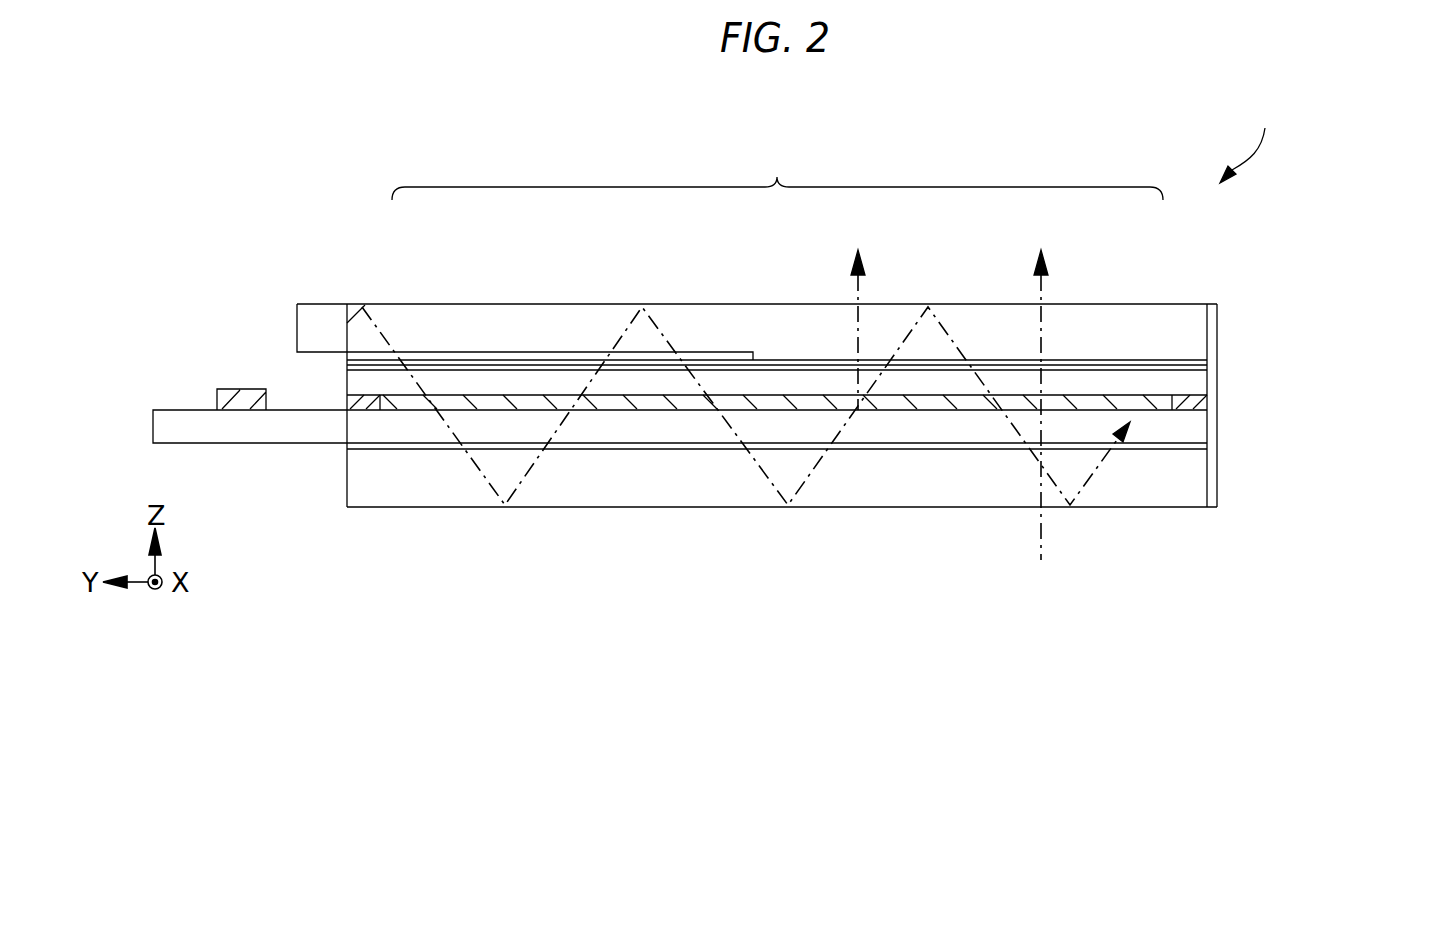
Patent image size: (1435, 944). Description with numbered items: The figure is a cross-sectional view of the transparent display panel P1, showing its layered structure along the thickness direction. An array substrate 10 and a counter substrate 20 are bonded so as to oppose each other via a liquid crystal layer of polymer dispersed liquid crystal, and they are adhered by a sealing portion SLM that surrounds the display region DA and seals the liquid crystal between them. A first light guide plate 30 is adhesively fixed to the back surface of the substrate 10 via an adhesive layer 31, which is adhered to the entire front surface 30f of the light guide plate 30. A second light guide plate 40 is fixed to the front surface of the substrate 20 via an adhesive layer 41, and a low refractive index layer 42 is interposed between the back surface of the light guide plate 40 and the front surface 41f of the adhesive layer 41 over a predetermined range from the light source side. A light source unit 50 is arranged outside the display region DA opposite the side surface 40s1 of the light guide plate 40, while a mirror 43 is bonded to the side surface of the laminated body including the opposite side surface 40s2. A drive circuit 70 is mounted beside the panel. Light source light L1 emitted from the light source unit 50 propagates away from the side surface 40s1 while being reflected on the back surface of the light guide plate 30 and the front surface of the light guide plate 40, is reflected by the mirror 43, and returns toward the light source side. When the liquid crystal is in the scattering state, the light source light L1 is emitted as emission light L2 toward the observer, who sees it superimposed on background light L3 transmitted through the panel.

The light guide plate 40 is at (1193, 338).
The light source unit 50 is at (318, 318).
The side surface 40s1 is at (345, 337).
The side surface 40s2 is at (1208, 327).
The low refractive index layer 42 is at (579, 358).
The front surface 41f is at (493, 358).
The adhesive layer 41 is at (355, 364).
The counter substrate 20 is at (1182, 380).
The sealing portion SLM is at (1205, 402).
The array substrate 10 is at (1180, 428).
The adhesive layer 31 is at (357, 445).
The drive circuit 70 is at (243, 397).
The front surface 30f is at (497, 442).
The light guide plate 30 is at (1180, 477).
The mirror 43 is at (1213, 497).
The light source light L1 is at (903, 330).
The emission light L2 is at (858, 332).
The background light L3 is at (1041, 332).
The display region DA is at (777, 170).
The display panel P1 is at (1252, 139).